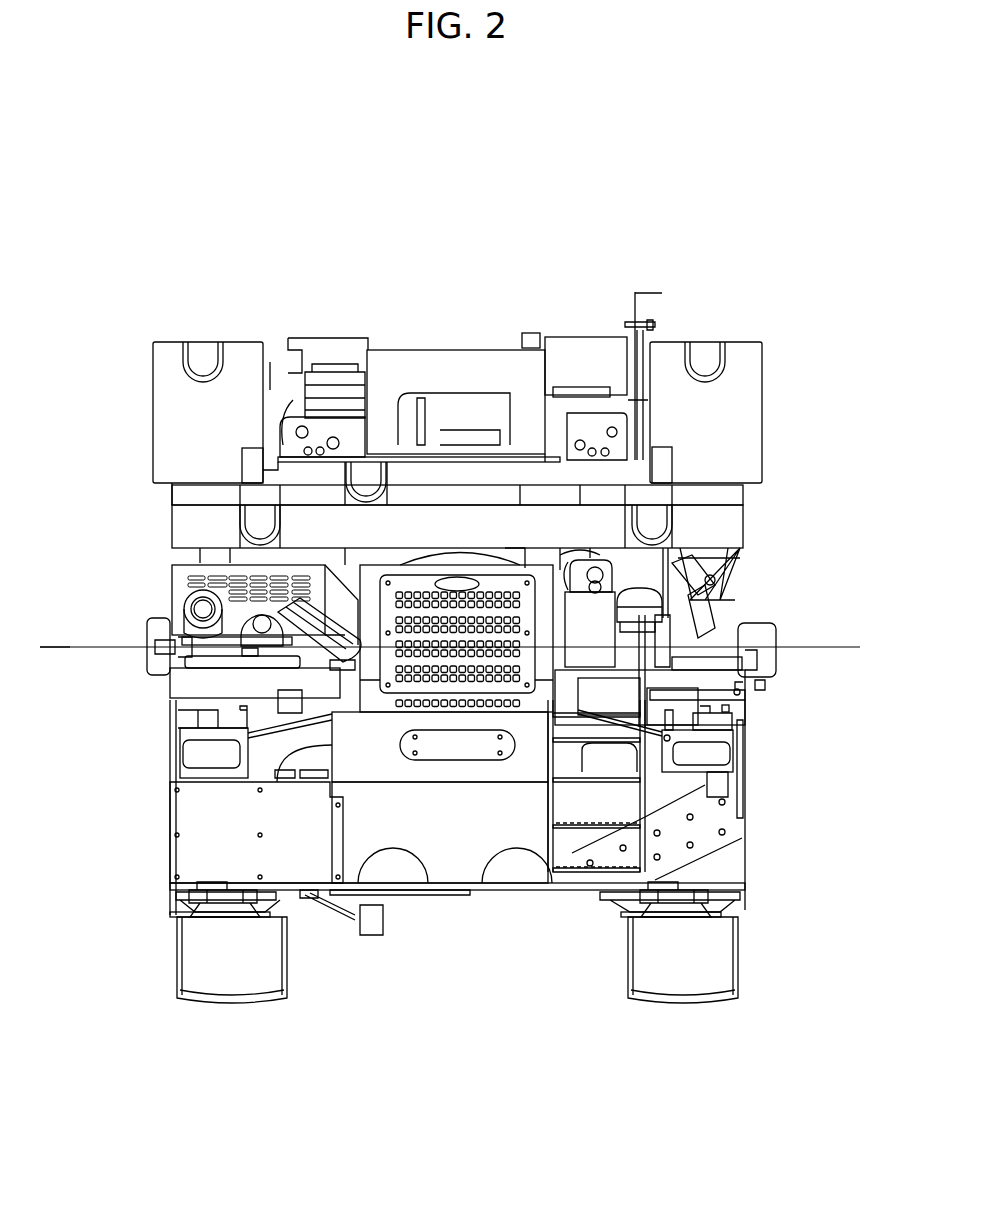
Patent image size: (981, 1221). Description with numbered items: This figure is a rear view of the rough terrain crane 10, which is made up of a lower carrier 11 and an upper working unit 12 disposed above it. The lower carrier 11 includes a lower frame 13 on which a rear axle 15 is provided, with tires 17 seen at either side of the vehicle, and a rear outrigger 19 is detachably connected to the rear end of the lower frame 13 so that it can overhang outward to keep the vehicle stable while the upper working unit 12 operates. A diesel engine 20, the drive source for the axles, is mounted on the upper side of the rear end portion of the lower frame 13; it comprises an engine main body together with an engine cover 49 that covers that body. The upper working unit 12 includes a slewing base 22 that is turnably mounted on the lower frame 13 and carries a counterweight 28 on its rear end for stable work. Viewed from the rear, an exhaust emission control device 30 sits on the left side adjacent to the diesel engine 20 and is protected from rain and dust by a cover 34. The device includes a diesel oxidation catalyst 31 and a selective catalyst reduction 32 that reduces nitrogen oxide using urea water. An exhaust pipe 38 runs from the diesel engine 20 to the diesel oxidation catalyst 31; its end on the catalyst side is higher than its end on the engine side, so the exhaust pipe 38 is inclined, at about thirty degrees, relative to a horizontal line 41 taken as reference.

The rough terrain crane 10 is at (145, 320).
The lower carrier 11 is at (782, 716).
The upper working unit 12 is at (780, 366).
The lower frame 13 is at (520, 765).
The rear axle 15 is at (152, 941).
The tire 17 is at (232, 995).
The rear outrigger 19 is at (754, 897).
The diesel engine 20 is at (486, 558).
The slewing base 22 is at (726, 521).
The counterweight 28 is at (455, 530).
The exhaust emission control device 30 is at (257, 563).
The diesel oxidation catalyst 31 is at (260, 638).
The selective catalyst reduction 32 is at (203, 638).
The cover 34 is at (182, 583).
The exhaust pipe 38 is at (320, 650).
The horizontal line 41 is at (65, 642).
The engine cover 49 is at (515, 583).